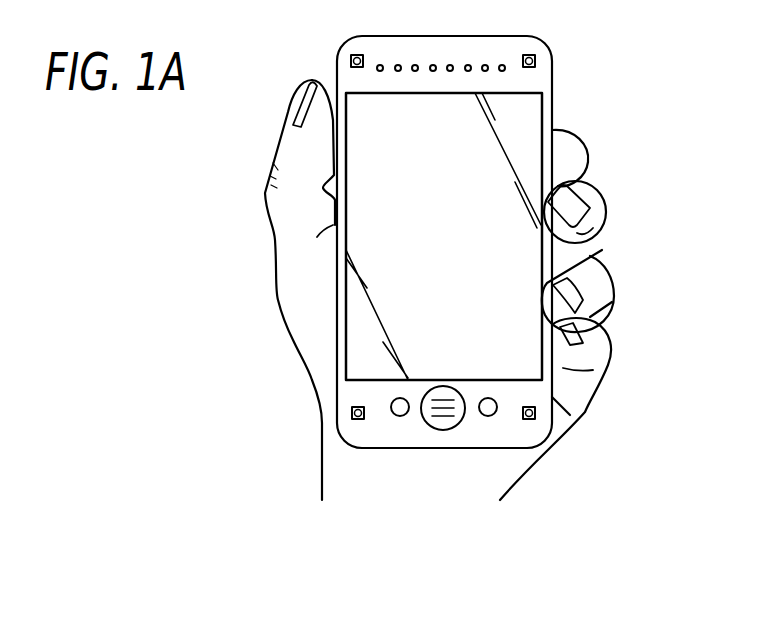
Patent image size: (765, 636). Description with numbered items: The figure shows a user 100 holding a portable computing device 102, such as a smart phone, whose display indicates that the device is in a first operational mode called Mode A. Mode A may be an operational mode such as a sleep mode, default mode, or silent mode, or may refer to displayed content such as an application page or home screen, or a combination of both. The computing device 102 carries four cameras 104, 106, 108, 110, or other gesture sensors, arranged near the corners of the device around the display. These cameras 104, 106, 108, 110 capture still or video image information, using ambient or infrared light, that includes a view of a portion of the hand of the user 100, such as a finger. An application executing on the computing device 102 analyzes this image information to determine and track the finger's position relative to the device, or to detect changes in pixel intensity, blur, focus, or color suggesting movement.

The user 100 is at (273, 241).
The computing device 102 is at (552, 101).
The camera 104 is at (357, 55).
The camera 106 is at (529, 55).
The camera 108 is at (358, 419).
The camera 110 is at (529, 419).